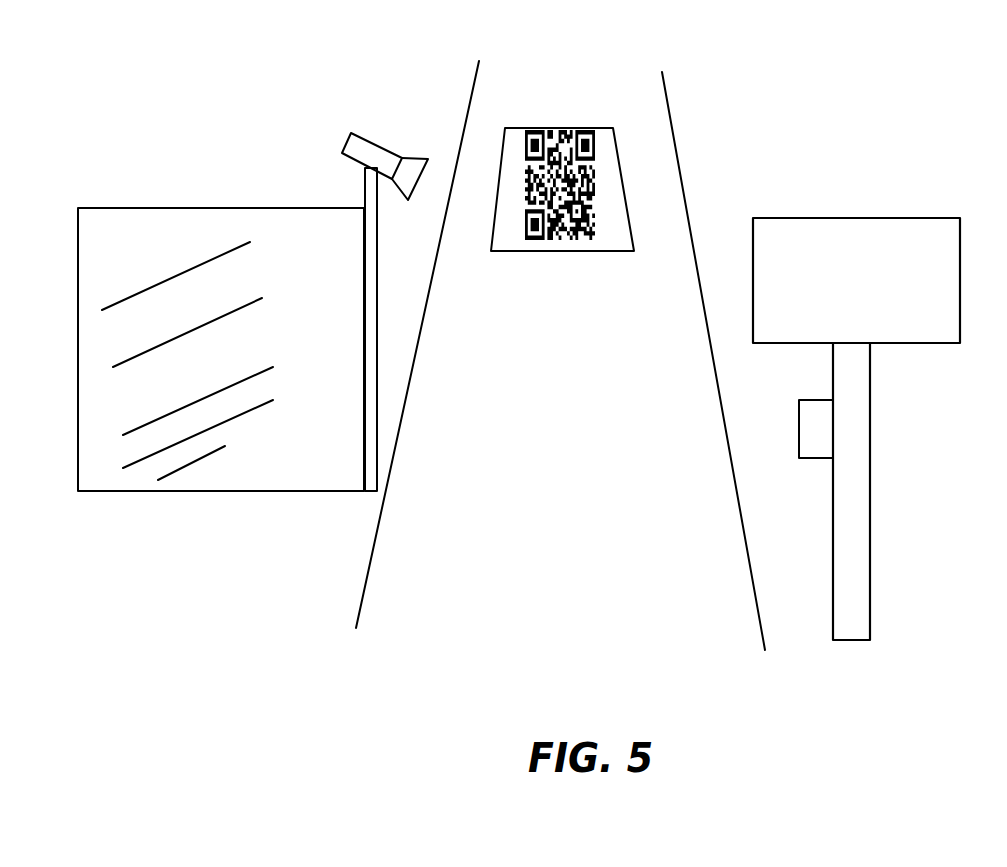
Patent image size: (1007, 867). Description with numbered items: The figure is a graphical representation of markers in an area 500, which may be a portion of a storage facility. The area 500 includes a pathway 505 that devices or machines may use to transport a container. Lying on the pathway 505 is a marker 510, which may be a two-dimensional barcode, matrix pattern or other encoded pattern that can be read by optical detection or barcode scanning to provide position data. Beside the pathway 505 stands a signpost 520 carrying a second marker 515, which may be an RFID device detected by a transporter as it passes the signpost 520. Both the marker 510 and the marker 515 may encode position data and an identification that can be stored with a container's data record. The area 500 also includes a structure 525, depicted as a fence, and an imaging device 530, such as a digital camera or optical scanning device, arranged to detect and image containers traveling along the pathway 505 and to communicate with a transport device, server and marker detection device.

The area 500 is at (835, 84).
The pathway 505 is at (377, 605).
The marker 510 is at (565, 128).
The marker 515 is at (800, 400).
The signpost 520 is at (860, 218).
The structure 525 is at (208, 208).
The imaging device 530 is at (342, 152).